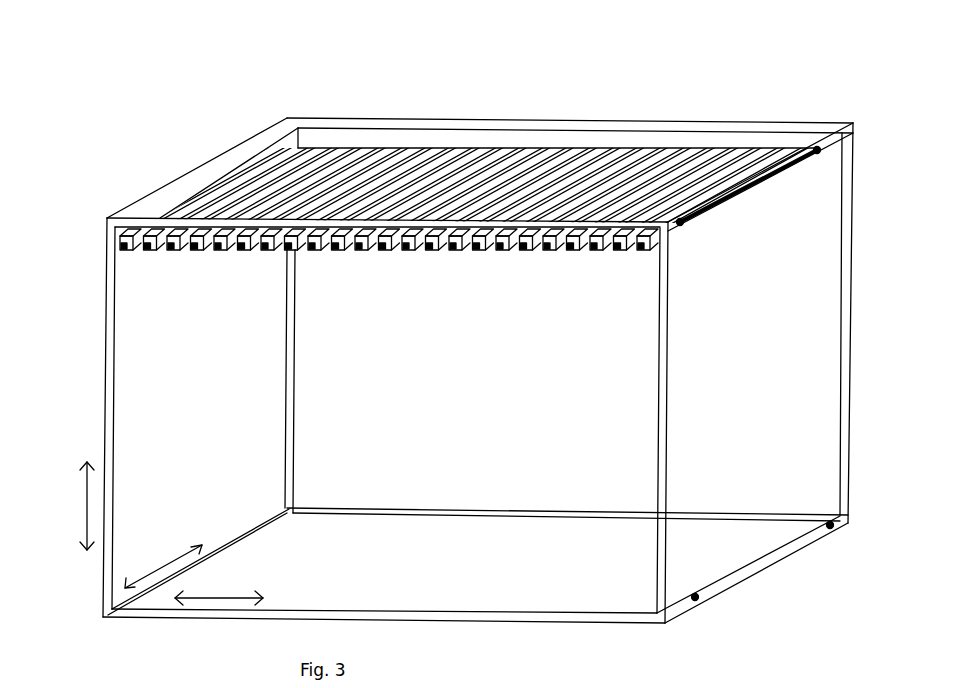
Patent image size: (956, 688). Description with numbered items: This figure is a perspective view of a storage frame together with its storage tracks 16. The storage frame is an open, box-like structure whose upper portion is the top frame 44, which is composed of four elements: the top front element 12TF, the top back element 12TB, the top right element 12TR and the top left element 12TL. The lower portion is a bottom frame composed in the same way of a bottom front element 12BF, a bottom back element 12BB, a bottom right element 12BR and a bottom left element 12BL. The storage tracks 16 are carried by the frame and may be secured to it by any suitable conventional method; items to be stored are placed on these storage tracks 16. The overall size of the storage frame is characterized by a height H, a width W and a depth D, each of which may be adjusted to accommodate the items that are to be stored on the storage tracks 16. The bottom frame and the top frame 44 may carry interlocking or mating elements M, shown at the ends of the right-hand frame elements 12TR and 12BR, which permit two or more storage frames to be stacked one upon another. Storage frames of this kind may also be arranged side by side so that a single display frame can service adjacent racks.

The top frame 44 is at (190, 95).
The top back frame element 12TB is at (523, 118).
The top left frame element 12TL is at (190, 172).
The top front frame element 12TF is at (107, 218).
The top right frame element 12TR is at (750, 187).
The storage tracks 16 is at (713, 207).
The interlocking or mating elements M is at (817, 152).
The bottom back frame element 12BB is at (428, 509).
The bottom left frame element 12BL is at (240, 540).
The bottom front frame element 12BF is at (399, 608).
The bottom right frame element 12BR is at (745, 572).
The height H is at (86, 510).
The depth D is at (162, 567).
The width W is at (218, 598).